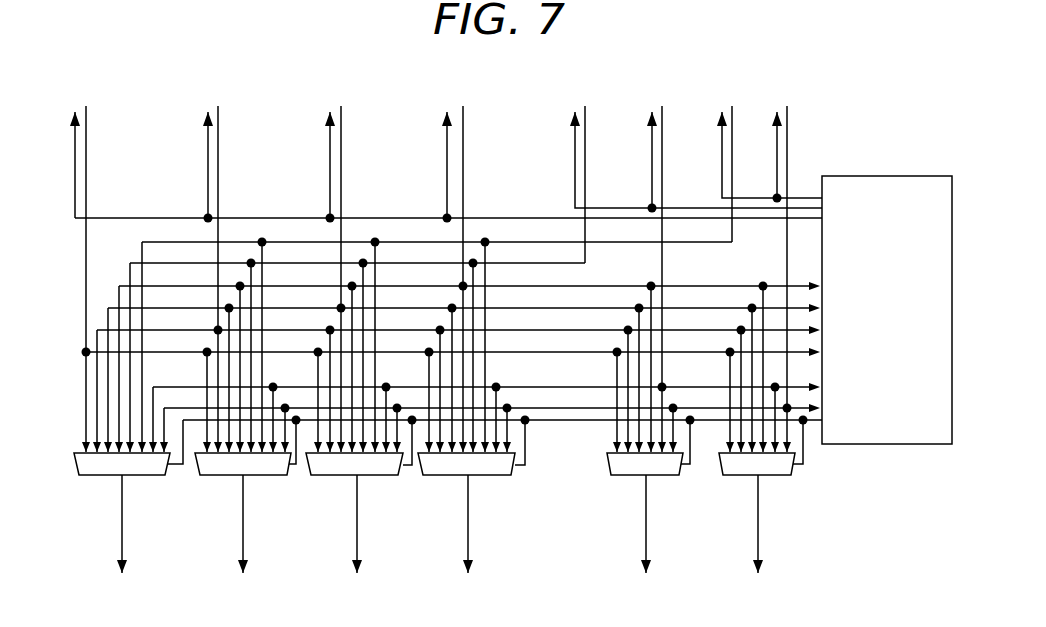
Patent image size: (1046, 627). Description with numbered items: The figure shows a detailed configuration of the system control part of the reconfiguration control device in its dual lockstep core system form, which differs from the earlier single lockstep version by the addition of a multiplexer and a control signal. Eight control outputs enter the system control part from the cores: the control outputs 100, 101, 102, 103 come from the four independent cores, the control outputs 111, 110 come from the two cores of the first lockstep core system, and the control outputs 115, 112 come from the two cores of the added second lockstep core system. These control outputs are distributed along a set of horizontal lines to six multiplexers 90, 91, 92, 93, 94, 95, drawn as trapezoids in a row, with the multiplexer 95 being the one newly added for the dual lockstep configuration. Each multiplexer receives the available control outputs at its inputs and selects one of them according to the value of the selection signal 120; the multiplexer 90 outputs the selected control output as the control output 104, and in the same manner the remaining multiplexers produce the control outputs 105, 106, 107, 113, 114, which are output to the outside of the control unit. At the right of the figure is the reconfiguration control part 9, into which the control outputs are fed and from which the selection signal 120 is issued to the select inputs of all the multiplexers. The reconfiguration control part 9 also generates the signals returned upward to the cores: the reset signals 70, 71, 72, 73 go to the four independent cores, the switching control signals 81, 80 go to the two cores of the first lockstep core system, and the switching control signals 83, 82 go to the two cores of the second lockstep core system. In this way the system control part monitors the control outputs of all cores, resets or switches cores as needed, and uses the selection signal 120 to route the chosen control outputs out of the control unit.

The reconfiguration control part 9 is at (880, 176).
The reset signal 70 is at (75, 153).
The reset signal 71 is at (208, 153).
The reset signal 72 is at (330, 153).
The reset signal 73 is at (447, 153).
The switching control signal 80 is at (652, 168).
The switching control signal 81 is at (575, 170).
The switching control signal 82 is at (777, 162).
The switching control signal 83 is at (722, 168).
The multiplexer 90 is at (90, 476).
The multiplexer 91 is at (213, 476).
The multiplexer 92 is at (326, 476).
The multiplexer 93 is at (437, 476).
The multiplexer 94 is at (632, 476).
The multiplexer 95 is at (730, 476).
The control output 100 is at (86, 153).
The control output 101 is at (218, 153).
The control output 102 is at (341, 153).
The control output 103 is at (463, 153).
The control output 104 is at (122, 537).
The control output 105 is at (243, 537).
The control output 106 is at (357, 537).
The control output 107 is at (468, 537).
The control output 110 is at (662, 155).
The control output 111 is at (585, 155).
The control output 112 is at (787, 155).
The control output 113 is at (646, 537).
The control output 114 is at (758, 537).
The control output 115 is at (732, 155).
The selection signal 120 is at (586, 420).